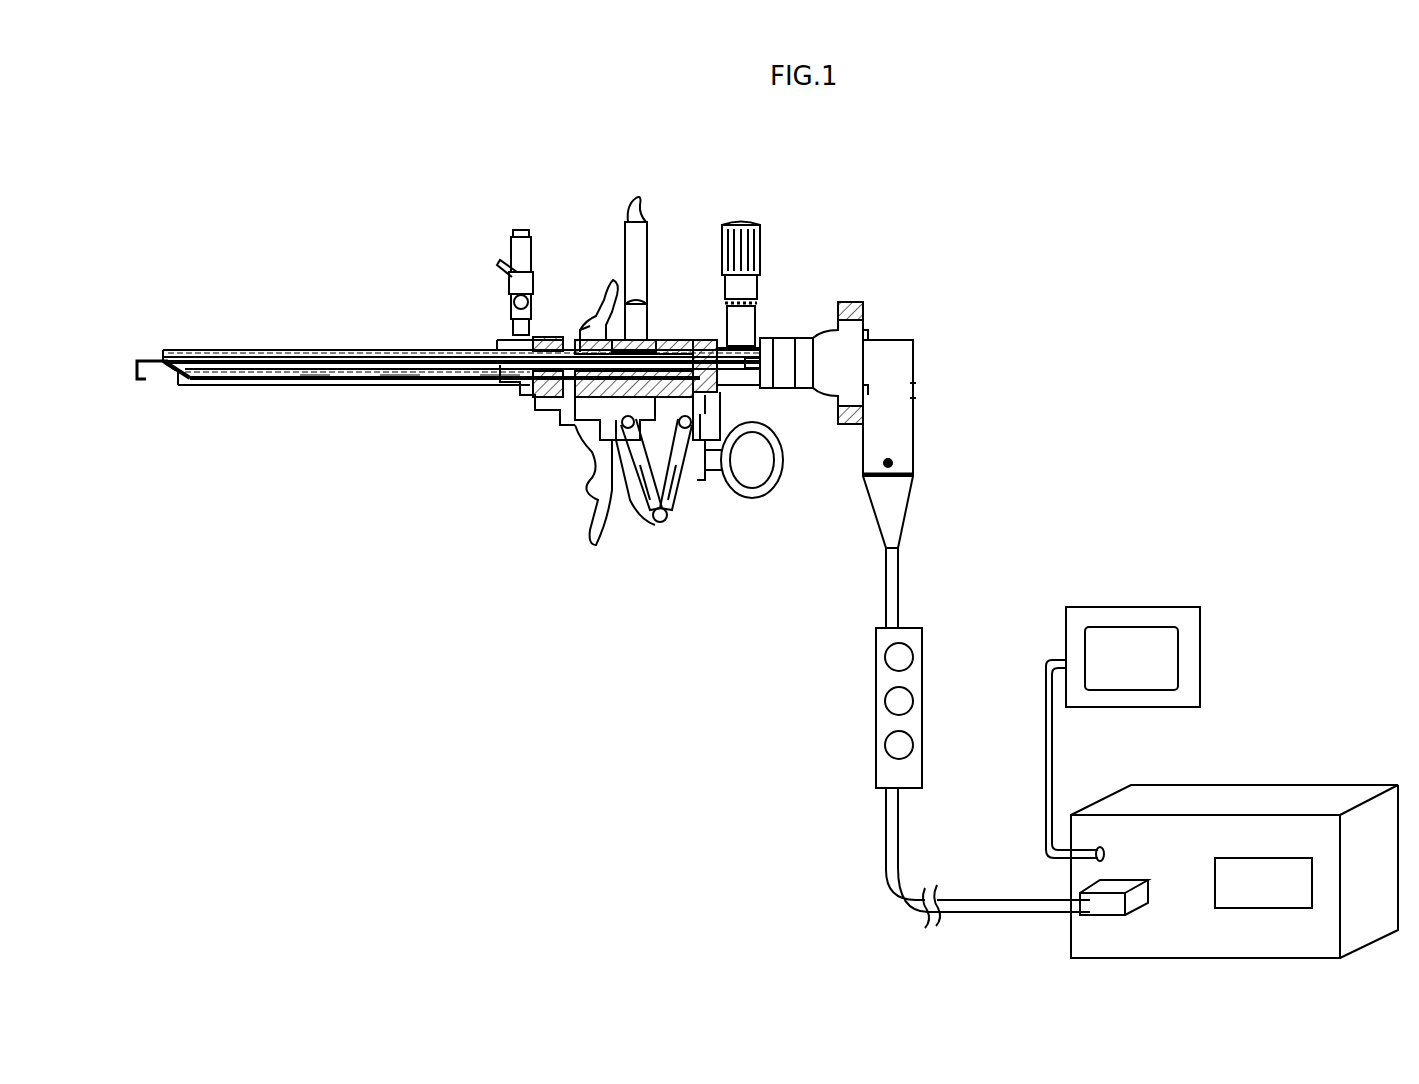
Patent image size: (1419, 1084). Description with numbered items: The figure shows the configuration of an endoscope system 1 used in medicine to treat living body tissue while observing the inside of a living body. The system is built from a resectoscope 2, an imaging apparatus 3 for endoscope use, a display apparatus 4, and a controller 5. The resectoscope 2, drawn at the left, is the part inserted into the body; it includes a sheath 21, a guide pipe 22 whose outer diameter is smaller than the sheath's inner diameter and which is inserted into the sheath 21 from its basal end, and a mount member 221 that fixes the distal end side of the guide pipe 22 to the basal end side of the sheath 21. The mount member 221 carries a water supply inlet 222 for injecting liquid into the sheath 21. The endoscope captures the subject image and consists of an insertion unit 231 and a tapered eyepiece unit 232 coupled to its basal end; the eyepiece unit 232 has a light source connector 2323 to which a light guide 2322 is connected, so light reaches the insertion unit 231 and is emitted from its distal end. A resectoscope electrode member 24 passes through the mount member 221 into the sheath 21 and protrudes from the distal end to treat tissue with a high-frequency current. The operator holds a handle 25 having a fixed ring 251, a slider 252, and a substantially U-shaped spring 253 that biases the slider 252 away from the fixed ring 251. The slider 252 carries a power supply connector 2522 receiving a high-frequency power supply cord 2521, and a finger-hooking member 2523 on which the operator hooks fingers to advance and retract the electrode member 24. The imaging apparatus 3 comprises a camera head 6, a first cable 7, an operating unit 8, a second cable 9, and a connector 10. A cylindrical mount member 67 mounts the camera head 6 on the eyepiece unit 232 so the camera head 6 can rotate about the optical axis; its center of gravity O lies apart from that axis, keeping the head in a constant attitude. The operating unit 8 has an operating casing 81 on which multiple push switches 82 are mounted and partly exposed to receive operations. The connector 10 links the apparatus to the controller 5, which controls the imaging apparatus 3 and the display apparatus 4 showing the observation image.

The endoscope system 1 is at (899, 180).
The resectoscope 2 is at (454, 251).
The sheath 21 is at (168, 353).
The guide pipe 22 is at (698, 350).
The insertion unit 231 is at (300, 360).
The eyepiece unit 232 is at (826, 345).
The light guide 2322 is at (745, 240).
The light source connector 2323 is at (757, 322).
The resectoscope electrode member 24 is at (150, 376).
The mount member 221 is at (546, 337).
The water supply inlet 222 is at (522, 246).
The handle 25 is at (778, 582).
The fixed ring 251 is at (745, 490).
The slider 252 is at (616, 432).
The spring 253 is at (668, 495).
The high-frequency power supply cord 2521 is at (638, 243).
The power supply connector 2522 is at (640, 305).
The finger-hooking member 2523 is at (598, 490).
The imaging apparatus for endoscope use 3 is at (978, 380).
The display apparatus 4 is at (1190, 614).
The controller 5 is at (1322, 802).
The camera head 6 is at (906, 398).
The mount member 67 is at (868, 310).
The center of gravity O is at (884, 466).
The first cable 7 is at (892, 568).
The operating unit 8 is at (914, 636).
The operating casing 81 is at (876, 768).
The push switches 82 is at (884, 745).
The second cable 9 is at (892, 806).
The connector 10 is at (1085, 882).